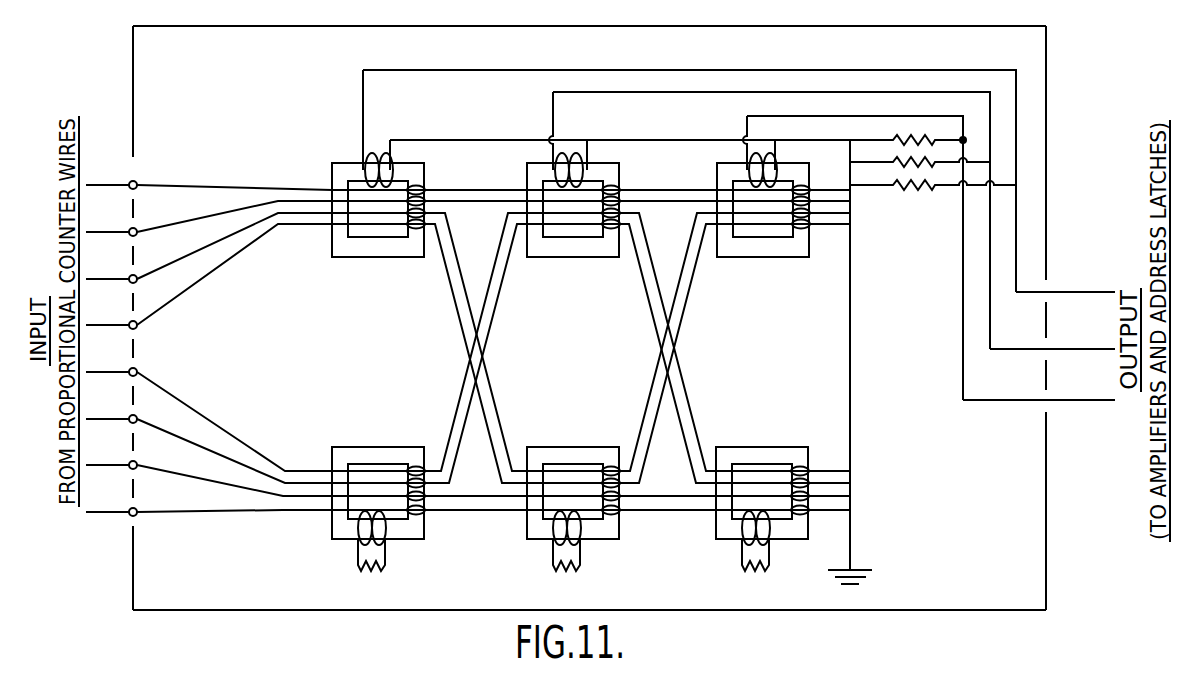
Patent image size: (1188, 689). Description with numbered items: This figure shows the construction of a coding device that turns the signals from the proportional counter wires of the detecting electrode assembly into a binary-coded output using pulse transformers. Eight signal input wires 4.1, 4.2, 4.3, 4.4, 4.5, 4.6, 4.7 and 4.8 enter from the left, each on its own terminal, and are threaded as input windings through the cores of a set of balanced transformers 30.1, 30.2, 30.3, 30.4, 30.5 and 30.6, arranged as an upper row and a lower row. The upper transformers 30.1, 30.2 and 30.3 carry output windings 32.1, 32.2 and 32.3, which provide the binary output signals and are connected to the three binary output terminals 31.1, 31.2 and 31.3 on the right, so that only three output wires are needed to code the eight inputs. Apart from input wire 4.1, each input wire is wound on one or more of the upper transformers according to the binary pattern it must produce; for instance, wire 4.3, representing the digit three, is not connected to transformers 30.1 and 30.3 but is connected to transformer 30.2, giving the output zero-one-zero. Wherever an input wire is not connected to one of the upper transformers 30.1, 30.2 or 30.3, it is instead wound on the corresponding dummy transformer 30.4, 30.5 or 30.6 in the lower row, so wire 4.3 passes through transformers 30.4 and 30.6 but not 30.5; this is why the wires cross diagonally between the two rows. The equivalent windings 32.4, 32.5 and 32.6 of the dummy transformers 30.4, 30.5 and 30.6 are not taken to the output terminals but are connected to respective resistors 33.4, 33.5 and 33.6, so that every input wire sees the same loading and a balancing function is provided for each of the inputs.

The signal input wire 4.1 is at (128, 509).
The signal input wire 4.2 is at (128, 462).
The signal input wire 4.3 is at (128, 416).
The signal input wire 4.4 is at (128, 369).
The signal input wire 4.5 is at (128, 322).
The signal input wire 4.6 is at (128, 276).
The signal input wire 4.7 is at (128, 229).
The signal input wire 4.8 is at (128, 182).
The balanced transformer 30.1 is at (343, 246).
The balanced transformer 30.2 is at (560, 246).
The balanced transformer 30.3 is at (748, 246).
The dummy transformer 30.4 is at (325, 528).
The dummy transformer 30.5 is at (525, 528).
The dummy transformer 30.6 is at (720, 528).
The binary output terminal 31.1 is at (1065, 279).
The binary output terminal 31.2 is at (1052, 336).
The binary output terminal 31.3 is at (1039, 387).
The output winding 32.1 is at (368, 174).
The output winding 32.2 is at (557, 176).
The output winding 32.3 is at (752, 176).
The output winding 32.4 is at (386, 530).
The output winding 32.5 is at (581, 530).
The output winding 32.6 is at (770, 530).
The resistor 33.4 is at (371, 573).
The resistor 33.5 is at (566, 573).
The resistor 33.6 is at (755, 573).